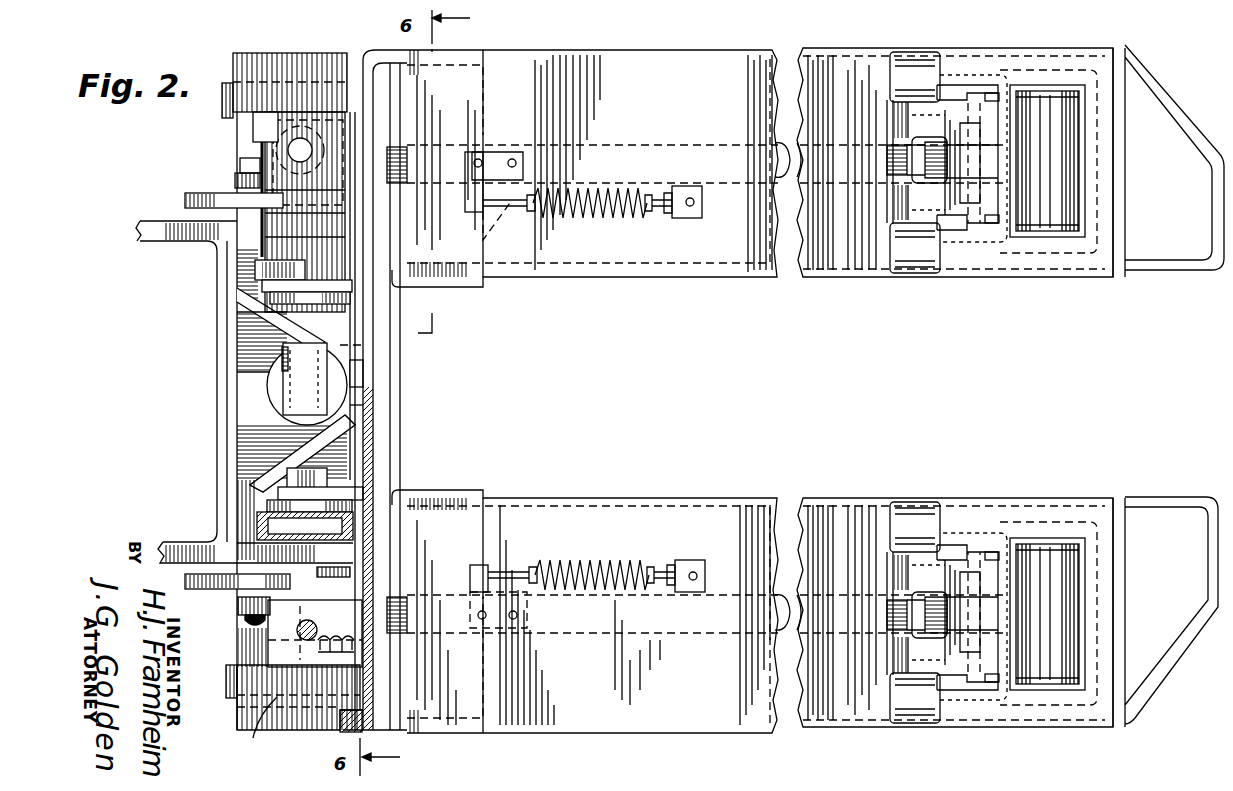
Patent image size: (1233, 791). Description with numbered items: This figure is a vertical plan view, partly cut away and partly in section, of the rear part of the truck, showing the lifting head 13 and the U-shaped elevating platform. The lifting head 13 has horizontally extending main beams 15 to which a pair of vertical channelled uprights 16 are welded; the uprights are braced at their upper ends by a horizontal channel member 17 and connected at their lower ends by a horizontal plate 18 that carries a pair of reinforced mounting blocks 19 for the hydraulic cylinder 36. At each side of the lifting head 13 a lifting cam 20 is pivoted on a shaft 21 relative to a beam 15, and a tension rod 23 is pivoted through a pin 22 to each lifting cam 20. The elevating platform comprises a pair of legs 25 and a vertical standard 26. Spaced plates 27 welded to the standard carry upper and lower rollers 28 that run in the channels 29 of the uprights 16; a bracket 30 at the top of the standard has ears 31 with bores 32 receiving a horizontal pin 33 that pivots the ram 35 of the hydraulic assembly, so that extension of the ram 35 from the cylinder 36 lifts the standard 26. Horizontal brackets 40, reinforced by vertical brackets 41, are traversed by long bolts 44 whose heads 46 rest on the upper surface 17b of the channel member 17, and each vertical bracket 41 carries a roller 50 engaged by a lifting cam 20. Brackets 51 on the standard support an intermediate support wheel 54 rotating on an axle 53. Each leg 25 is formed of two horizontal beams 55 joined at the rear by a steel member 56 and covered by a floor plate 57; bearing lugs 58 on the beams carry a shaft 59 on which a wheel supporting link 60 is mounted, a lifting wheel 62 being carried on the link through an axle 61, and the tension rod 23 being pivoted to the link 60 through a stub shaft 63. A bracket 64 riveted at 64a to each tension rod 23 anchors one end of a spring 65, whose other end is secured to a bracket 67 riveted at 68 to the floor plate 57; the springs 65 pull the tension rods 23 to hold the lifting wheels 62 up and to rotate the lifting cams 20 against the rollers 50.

The lifting head 13 is at (214, 407).
The main beam 15 is at (148, 236).
The vertical channelled upright 16 is at (237, 298).
The horizontal channel member 17 is at (268, 322).
The upper surface of channel beam 17b is at (260, 120).
The horizontal plate 18 is at (252, 447).
The mounting block 19 is at (245, 380).
The lifting cam 20 is at (190, 194).
The shaft 21 is at (365, 570).
The pin 22 is at (300, 633).
The tension rod 23 is at (397, 151).
The leg 25 is at (858, 280).
The vertical standard 26 is at (376, 444).
The spaced plate 27 is at (340, 302).
The roller 28 is at (350, 276).
The channel 29 is at (330, 247).
The bracket 30 is at (356, 373).
The ear 31 is at (257, 352).
The bore 32 is at (350, 347).
The horizontal pin 33 is at (360, 406).
The ram 35 is at (290, 386).
The cylinder 36 is at (262, 404).
The horizontal bracket 40 is at (298, 628).
The vertical bracket 41 is at (243, 166).
The long bolt 44 is at (318, 646).
The bolt head 46 is at (297, 149).
The roller 50 is at (240, 180).
The bracket 51 is at (246, 53).
The axle 53 is at (264, 726).
The intermediate support wheel 54 is at (226, 83).
The horizontal beam 55 is at (738, 276).
The steel member 56 is at (1166, 270).
The floor plate 57 is at (645, 113).
The bearing lug 58 is at (927, 62).
The shaft 59 is at (895, 150).
The wheel supporting link 60 is at (957, 223).
The axle 61 is at (1046, 238).
The lifting wheel 62 is at (1036, 161).
The stub shaft 63 is at (988, 225).
The bracket 64 is at (481, 216).
The rivet 64a is at (490, 162).
The spring 65 is at (612, 216).
The bracket 67 is at (703, 202).
The rivet 68 is at (690, 208).